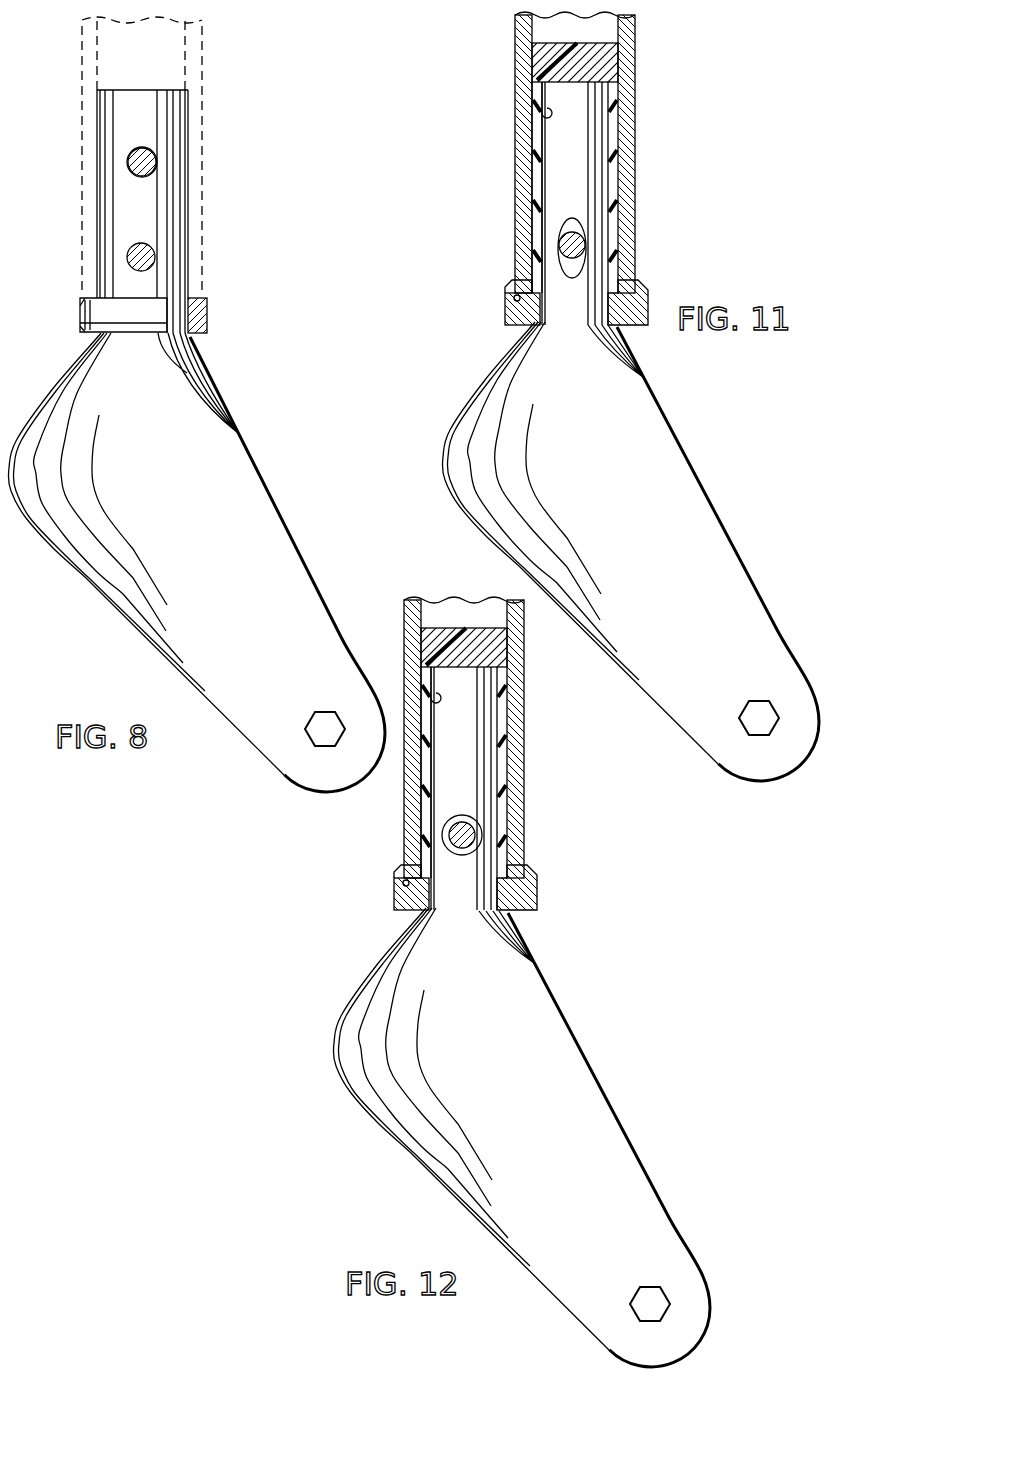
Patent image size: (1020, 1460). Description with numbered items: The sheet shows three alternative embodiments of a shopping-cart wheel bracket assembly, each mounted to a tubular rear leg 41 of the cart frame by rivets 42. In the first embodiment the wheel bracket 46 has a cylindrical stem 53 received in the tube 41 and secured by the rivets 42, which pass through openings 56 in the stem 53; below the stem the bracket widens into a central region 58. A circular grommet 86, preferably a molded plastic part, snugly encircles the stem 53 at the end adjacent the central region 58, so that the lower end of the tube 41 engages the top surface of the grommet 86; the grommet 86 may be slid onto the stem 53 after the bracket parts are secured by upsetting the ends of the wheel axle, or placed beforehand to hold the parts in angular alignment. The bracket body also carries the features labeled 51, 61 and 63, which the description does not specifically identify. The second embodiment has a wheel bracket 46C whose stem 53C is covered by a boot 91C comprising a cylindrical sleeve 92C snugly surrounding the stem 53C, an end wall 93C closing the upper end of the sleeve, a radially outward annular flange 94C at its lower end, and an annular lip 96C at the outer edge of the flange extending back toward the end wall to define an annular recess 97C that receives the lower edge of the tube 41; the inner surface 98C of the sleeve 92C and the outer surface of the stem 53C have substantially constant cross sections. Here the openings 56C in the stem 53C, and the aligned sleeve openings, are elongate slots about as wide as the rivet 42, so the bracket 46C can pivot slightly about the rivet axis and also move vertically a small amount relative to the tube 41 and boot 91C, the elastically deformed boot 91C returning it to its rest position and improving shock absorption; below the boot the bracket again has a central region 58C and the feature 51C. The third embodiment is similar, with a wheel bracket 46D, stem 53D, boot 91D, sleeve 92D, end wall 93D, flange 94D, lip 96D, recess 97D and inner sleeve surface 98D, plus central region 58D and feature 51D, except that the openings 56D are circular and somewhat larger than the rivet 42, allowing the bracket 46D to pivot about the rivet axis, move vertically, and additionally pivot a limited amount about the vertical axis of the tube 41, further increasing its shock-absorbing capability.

In FIG. 8, the tubular rear leg 41 is at (195, 90).
In FIG. 11, the tubular rear leg 41 is at (627, 50).
In FIG. 12, the tubular rear leg 41 is at (517, 648).
In FIG. 8, the rivet 42 is at (152, 165).
In FIG. 11, the rivet 42 is at (582, 247).
In FIG. 12, the rivet 42 is at (472, 833).
In FIG. 8, the wheel bracket 46 is at (196, 562).
In FIG. 8, the hose outer edge 51 is at (262, 462).
In FIG. 8, the cylindrical stem 53 is at (162, 210).
In FIG. 8, the opening 56 is at (130, 168).
In FIG. 8, the central region 58 is at (133, 378).
In FIG. 8, the inner wall 61 is at (253, 595).
In FIG. 8, the hex nut 63 is at (318, 742).
In FIG. 8, the circular grommet 86 is at (117, 312).
In FIG. 11, the boot 91C is at (555, 35).
In FIG. 11, the cylindrical sleeve 92C is at (537, 170).
In FIG. 11, the end wall 93C is at (583, 53).
In FIG. 11, the annular flange 94C is at (636, 326).
In FIG. 11, the annular lip 96C is at (508, 287).
In FIG. 11, the annular recess 97C is at (512, 300).
In FIG. 11, the inner surface of sleeve 98C is at (545, 112).
In FIG. 11, the stem 53C is at (580, 140).
In FIG. 11, the elongate slot opening 56C is at (559, 232).
In FIG. 11, the central region 58C is at (577, 363).
In FIG. 11, the wheel bracket 46C is at (634, 551).
In FIG. 11, the hose outer edge 51C is at (719, 499).
In FIG. 12, the boot 91D is at (443, 618).
In FIG. 12, the cylindrical sleeve 92D is at (423, 765).
In FIG. 12, the end wall 93D is at (482, 640).
In FIG. 12, the annular flange 94D is at (518, 908).
In FIG. 12, the annular lip 96D is at (398, 872).
In FIG. 12, the annular recess 97D is at (405, 880).
In FIG. 12, the inner surface of sleeve 98D is at (427, 697).
In FIG. 12, the stem 53D is at (470, 728).
In FIG. 12, the oversized circular opening 56D is at (446, 847).
In FIG. 12, the central region 58D is at (462, 960).
In FIG. 12, the wheel bracket 46D is at (521, 1137).
In FIG. 12, the hose outer edge 51D is at (625, 1116).